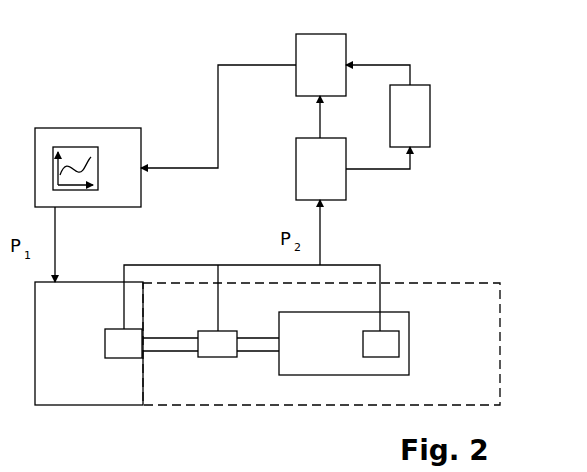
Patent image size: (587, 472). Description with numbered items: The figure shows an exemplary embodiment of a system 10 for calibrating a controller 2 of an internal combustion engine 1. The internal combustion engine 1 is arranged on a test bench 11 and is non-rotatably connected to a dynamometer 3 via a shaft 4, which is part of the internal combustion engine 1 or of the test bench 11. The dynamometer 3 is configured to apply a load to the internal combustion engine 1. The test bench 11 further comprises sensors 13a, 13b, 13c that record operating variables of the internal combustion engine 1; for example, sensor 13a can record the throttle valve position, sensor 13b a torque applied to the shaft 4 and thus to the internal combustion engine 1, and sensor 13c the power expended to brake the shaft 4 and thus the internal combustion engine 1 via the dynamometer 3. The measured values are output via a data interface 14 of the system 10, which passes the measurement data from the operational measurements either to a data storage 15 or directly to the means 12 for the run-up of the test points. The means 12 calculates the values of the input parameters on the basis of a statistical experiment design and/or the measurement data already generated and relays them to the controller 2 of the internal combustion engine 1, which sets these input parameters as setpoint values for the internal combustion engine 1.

The internal combustion engine 1 is at (80, 354).
The controller 2 is at (108, 177).
The dynamometer 3 is at (338, 354).
The shaft 4 is at (260, 352).
The system 10 is at (458, 183).
The test bench 11 is at (476, 354).
The means for test point run-up 12 is at (333, 77).
The sensor 13a is at (112, 353).
The sensor 13b is at (206, 352).
The sensor 13c is at (369, 352).
The data interface 14 is at (332, 179).
The data storage 15 is at (399, 127).